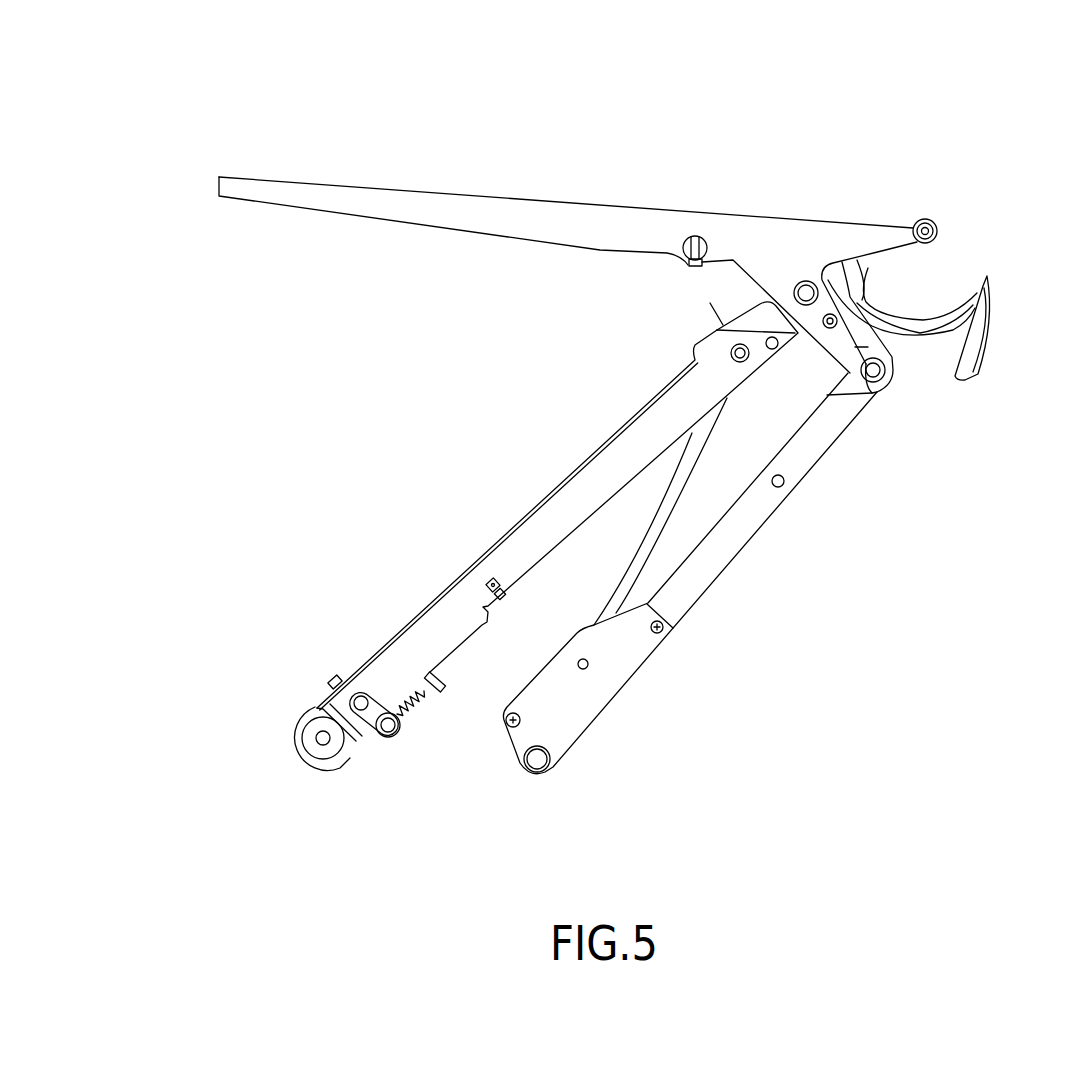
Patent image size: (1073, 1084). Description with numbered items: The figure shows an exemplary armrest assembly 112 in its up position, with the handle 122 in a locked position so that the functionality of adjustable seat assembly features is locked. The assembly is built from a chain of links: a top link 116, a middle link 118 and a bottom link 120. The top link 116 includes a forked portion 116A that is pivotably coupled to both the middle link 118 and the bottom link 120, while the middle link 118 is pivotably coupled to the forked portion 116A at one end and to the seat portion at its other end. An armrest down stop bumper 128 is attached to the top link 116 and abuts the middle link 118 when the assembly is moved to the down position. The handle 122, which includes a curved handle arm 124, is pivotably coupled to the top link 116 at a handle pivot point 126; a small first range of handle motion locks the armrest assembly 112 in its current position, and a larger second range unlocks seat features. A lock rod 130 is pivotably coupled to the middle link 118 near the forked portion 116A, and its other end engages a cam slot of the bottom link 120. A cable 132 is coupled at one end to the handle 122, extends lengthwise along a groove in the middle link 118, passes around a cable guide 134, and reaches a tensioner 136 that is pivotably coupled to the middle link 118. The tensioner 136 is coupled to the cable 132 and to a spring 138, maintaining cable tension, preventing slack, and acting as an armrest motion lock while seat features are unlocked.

The armrest assembly 112 is at (267, 85).
The top link 116 is at (440, 198).
The forked portion 116A is at (892, 357).
The middle link 118 is at (593, 472).
The bottom link 120 is at (717, 555).
The handle 122 is at (980, 348).
The curved handle arm 124 is at (922, 323).
The handle pivot point 126 is at (928, 223).
The armrest down stop bumper 128 is at (697, 270).
The lock rod 130 is at (642, 545).
The cable 132 is at (865, 278).
The cable guide 134 is at (310, 752).
The tensioner 136 is at (372, 730).
The spring 138 is at (413, 710).